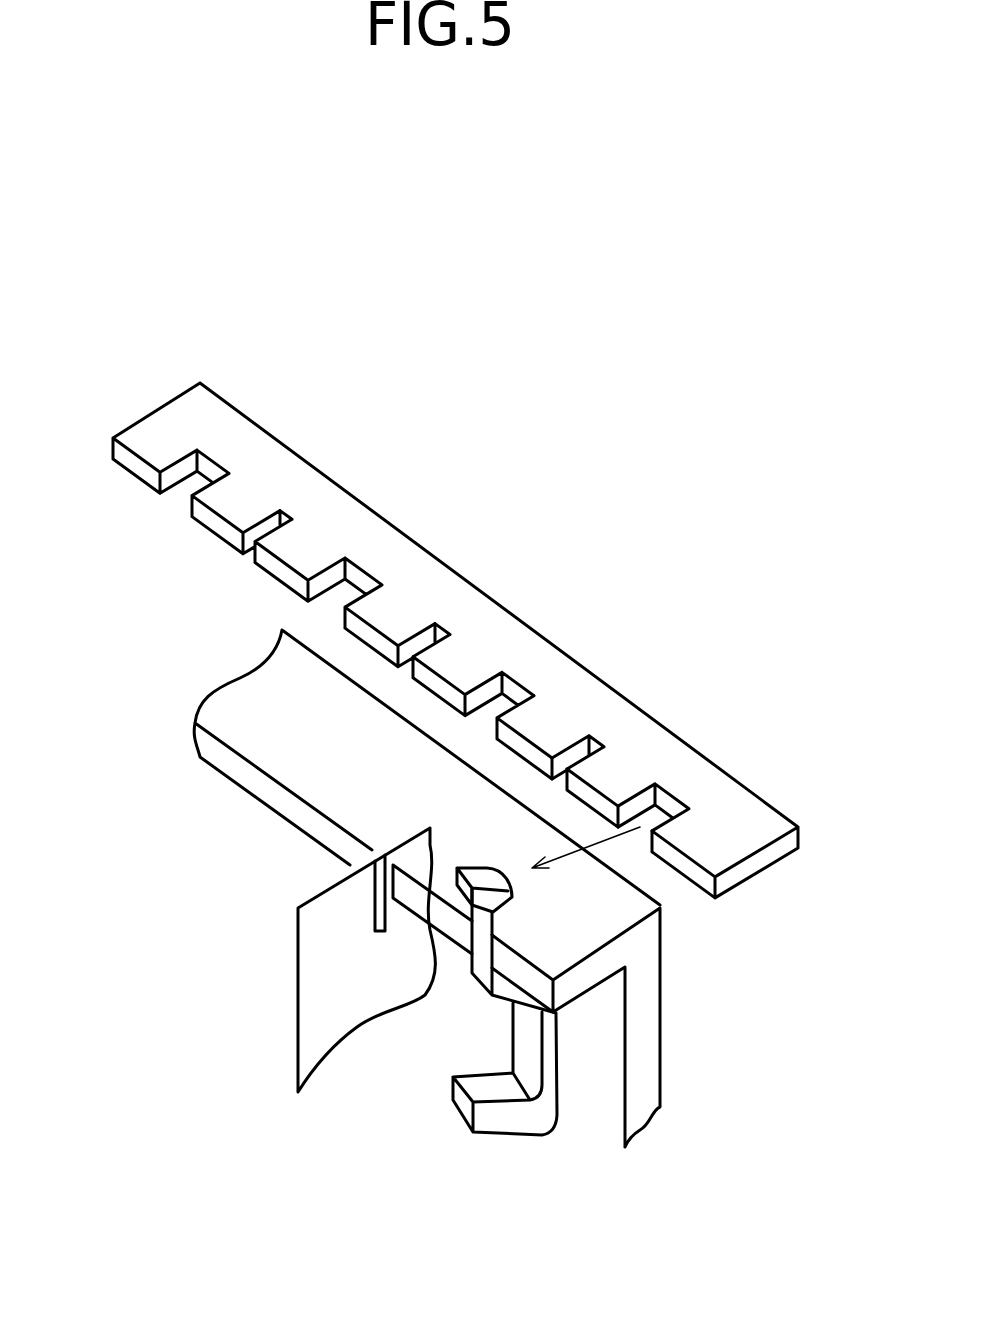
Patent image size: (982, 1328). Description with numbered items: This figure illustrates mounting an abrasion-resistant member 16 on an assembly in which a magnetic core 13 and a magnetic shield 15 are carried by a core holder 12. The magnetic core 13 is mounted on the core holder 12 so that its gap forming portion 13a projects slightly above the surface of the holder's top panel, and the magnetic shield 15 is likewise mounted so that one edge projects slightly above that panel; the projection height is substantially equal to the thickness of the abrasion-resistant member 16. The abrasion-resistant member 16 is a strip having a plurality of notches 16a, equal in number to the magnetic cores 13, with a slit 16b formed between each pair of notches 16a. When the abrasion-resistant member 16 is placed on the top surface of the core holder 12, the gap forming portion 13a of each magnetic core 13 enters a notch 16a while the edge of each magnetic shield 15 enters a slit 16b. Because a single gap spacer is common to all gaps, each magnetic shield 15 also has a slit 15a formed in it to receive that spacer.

The core holder 12 is at (648, 1042).
The magnetic core 13 is at (553, 1070).
The gap forming portion 13a is at (477, 874).
The magnetic shield 15 is at (320, 968).
The slit 15a is at (374, 908).
The abrasion-resistant member 16 is at (468, 580).
The notch 16a is at (668, 792).
The slit 16b is at (598, 737).